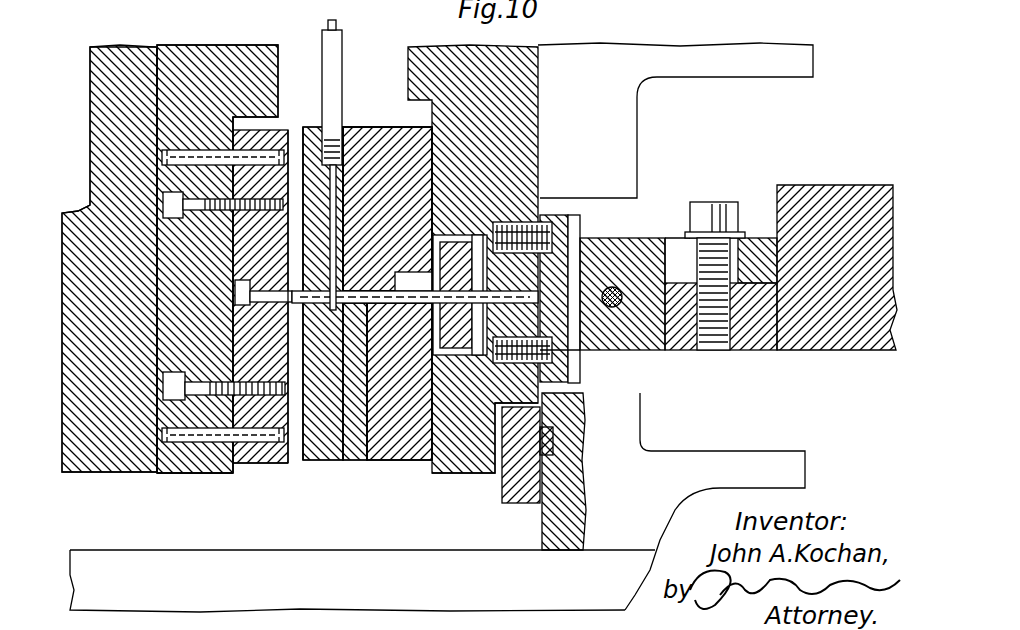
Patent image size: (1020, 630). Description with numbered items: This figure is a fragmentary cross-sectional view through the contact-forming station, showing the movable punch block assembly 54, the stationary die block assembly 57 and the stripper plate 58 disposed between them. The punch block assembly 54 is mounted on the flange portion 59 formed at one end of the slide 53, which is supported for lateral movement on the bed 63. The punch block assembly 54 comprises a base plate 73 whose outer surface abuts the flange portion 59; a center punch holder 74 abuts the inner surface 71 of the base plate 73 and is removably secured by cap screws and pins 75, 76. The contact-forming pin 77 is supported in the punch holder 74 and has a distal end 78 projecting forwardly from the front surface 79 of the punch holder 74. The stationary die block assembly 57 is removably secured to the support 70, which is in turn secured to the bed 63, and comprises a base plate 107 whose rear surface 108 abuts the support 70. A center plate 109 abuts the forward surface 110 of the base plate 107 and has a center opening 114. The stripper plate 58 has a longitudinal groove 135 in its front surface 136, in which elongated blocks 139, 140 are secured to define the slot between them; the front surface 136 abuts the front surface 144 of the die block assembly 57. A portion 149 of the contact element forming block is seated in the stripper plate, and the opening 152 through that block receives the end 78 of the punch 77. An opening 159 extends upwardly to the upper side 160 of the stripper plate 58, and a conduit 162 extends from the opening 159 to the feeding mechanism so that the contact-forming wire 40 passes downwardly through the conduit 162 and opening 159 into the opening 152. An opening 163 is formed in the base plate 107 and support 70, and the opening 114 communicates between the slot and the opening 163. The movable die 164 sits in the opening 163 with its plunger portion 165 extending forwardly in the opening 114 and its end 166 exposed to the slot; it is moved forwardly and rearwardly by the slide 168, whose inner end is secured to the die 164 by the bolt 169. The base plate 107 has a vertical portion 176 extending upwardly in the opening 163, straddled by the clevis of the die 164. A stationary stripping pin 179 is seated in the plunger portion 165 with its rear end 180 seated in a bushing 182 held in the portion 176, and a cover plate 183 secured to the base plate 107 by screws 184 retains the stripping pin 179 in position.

The contact-forming wire 40 is at (326, 26).
The slide 53 is at (80, 245).
The movable punch block assembly 54 is at (163, 492).
The stationary die block assembly 57 is at (460, 488).
The stripper plate 58 is at (353, 108).
The flange portion 59 is at (113, 70).
The bed 63 is at (520, 580).
The support 70 is at (757, 453).
The inner surface 71 is at (240, 468).
The base plate 73 is at (205, 473).
The center punch holder 74 is at (262, 243).
The cap screw 75 is at (205, 215).
The pin 76 is at (190, 160).
The contact-forming pin 77 is at (250, 303).
The distal end 78 is at (332, 305).
The front surface 79 is at (293, 455).
The base plate 107 is at (538, 100).
The rear surface 108 is at (538, 130).
The center plate 109 is at (384, 465).
The forward surface 110 is at (432, 473).
The center opening 114 is at (370, 305).
The longitudinal groove 135 is at (340, 230).
The front surface 136 is at (350, 440).
The elongated block 139 is at (365, 262).
The elongated block 140 is at (343, 330).
The front surface 144 is at (357, 160).
The portion 149 is at (300, 310).
The opening 152 is at (300, 290).
The opening 159 is at (350, 200).
The upper side 160 is at (307, 128).
The conduit 162 is at (325, 52).
The opening 163 is at (462, 350).
The movable die 164 is at (457, 254).
The plunger portion 165 is at (412, 307).
The end 166 is at (370, 277).
The slide 168 is at (840, 190).
The bolt 169 is at (712, 208).
The vertical portion 176 is at (545, 213).
The stationary stripping pin 179 is at (455, 303).
The rear end 180 is at (535, 340).
The bushing 182 is at (575, 310).
The cover plate 183 is at (600, 240).
The screw 184 is at (580, 362).